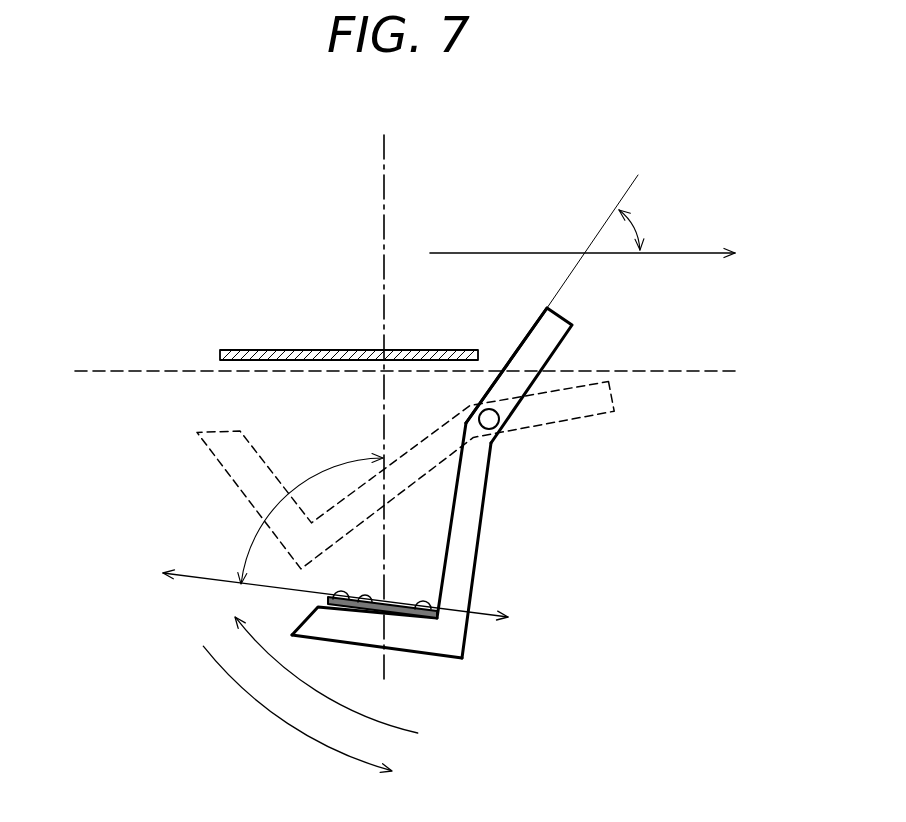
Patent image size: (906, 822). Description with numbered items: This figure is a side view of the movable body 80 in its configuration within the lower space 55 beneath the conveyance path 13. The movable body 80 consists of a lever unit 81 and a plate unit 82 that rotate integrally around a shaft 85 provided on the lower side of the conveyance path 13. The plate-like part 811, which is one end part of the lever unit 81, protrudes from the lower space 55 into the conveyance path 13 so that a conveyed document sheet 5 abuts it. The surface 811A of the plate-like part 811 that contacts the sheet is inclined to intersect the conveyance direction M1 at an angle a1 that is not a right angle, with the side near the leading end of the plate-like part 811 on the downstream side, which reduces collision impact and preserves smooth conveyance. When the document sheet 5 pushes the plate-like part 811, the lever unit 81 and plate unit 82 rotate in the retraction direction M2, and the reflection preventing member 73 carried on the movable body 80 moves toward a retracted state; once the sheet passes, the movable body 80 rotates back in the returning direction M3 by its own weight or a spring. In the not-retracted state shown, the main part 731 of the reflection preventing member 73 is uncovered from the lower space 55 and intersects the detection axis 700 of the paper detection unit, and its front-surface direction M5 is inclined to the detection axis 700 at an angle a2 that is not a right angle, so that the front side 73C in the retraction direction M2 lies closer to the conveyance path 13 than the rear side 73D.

The detection axis 700 is at (383, 211).
The conveyance path 13 is at (99, 369).
The document sheet 5 is at (288, 349).
The surface of the plate-like part 811A is at (527, 332).
The plate-like part 811 is at (543, 350).
The lever unit 81 is at (490, 477).
The shaft 85 is at (499, 419).
The movable body 80 is at (437, 521).
The lower space 55 is at (612, 542).
The reflection preventing member 73 is at (409, 621).
The front side of the main part 73C is at (341, 590).
The rear side of the main part 73D is at (422, 600).
The main part of the reflection preventing member 731 is at (358, 612).
The plate unit 82 is at (414, 654).
The conveyance direction M1 is at (602, 254).
The retraction direction M2 is at (347, 684).
The returning direction M3 is at (318, 717).
The front-surface direction M5 is at (315, 590).
The angle a1 is at (606, 241).
The angle a2 is at (310, 510).